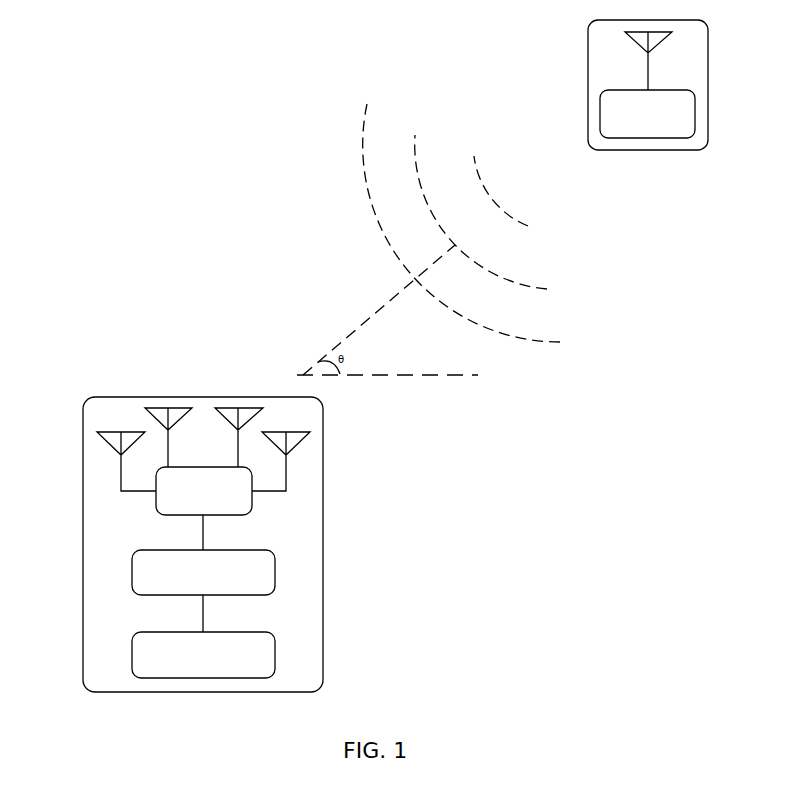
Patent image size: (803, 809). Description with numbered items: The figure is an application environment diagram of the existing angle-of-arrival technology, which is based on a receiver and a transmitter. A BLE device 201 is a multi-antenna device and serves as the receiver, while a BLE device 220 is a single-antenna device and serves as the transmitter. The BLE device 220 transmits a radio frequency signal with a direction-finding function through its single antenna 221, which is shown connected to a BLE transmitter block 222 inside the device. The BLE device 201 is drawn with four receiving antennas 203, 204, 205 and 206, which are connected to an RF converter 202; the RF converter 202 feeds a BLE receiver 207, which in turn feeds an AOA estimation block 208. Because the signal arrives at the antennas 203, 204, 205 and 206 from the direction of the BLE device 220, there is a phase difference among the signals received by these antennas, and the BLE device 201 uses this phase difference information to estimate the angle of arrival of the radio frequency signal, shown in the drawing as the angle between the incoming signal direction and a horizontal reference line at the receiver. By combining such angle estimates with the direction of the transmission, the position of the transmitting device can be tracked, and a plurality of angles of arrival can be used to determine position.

The BLE device 201 is at (83, 445).
The RF converter 202 is at (238, 515).
The antenna 203 is at (128, 492).
The antenna 204 is at (168, 453).
The antenna 205 is at (238, 453).
The antenna 206 is at (286, 491).
The BLE receiver 207 is at (247, 595).
The AOA estimation unit 208 is at (132, 655).
The BLE device 220 is at (708, 52).
The single antenna 221 is at (650, 60).
The BLE transmitter 222 is at (670, 138).